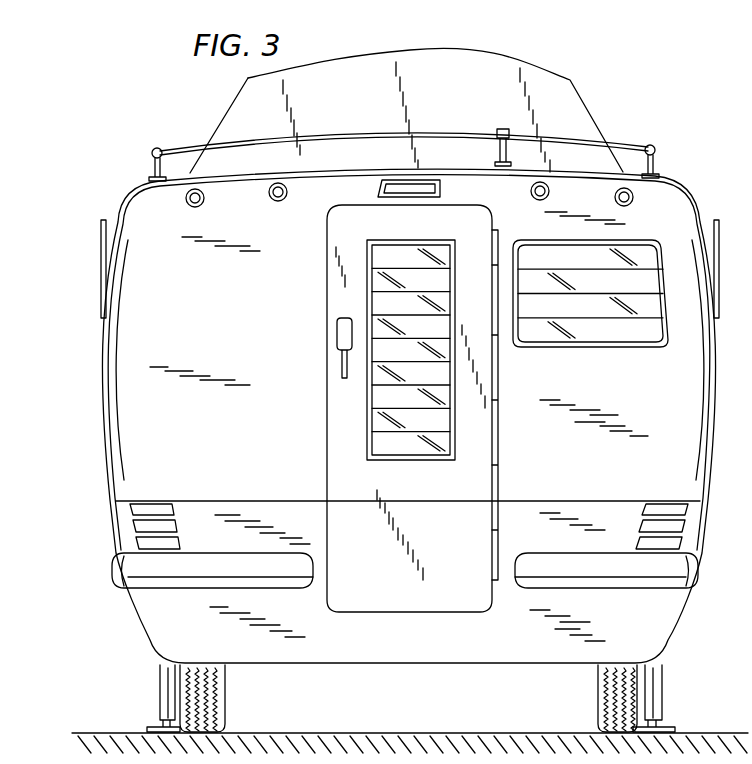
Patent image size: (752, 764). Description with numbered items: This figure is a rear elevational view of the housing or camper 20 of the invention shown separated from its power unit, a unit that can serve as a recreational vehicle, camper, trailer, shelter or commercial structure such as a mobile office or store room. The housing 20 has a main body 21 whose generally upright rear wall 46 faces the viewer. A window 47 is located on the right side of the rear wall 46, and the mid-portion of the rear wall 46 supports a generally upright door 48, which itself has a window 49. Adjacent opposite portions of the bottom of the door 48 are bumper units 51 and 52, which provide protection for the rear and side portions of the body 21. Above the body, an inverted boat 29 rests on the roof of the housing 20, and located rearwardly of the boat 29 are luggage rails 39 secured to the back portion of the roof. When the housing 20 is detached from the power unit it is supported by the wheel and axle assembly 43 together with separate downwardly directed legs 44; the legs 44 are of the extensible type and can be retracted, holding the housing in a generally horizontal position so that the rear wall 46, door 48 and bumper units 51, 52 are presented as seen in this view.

The housing or camper 20 is at (670, 115).
The main body 21 is at (98, 352).
The inverted boat 29 is at (450, 62).
The luggage rails 39 is at (192, 147).
The wheel and axle assembly 43 is at (222, 692).
The legs 44 is at (165, 686).
The rear wall 46 is at (245, 328).
The window 47 is at (607, 330).
The door 48 is at (462, 527).
The window 49 is at (400, 440).
The bumper unit 51 is at (250, 573).
The bumper unit 52 is at (583, 573).